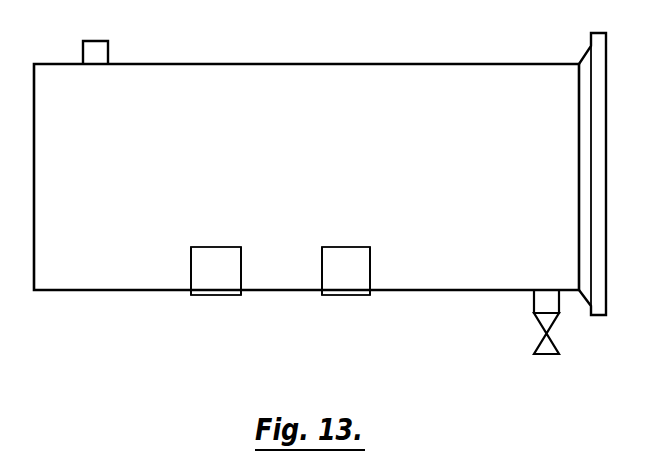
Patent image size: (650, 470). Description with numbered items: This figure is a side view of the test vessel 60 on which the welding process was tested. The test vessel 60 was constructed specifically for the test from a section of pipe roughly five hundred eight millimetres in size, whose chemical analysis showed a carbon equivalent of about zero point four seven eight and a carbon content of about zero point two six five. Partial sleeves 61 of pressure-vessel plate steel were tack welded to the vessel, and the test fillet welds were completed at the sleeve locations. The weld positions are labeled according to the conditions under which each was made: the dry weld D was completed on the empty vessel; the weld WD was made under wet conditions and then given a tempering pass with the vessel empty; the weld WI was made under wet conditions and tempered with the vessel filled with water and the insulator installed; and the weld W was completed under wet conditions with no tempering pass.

The test vessel 60 is at (148, 290).
The partial sleeves 61 is at (240, 274).
The weld completed under wet conditions using the insulator WI is at (175, 264).
The dry condition type weld D is at (249, 264).
The weld completed under both wet and dry conditions WD is at (304, 264).
The weld completed under wet conditions W is at (379, 264).